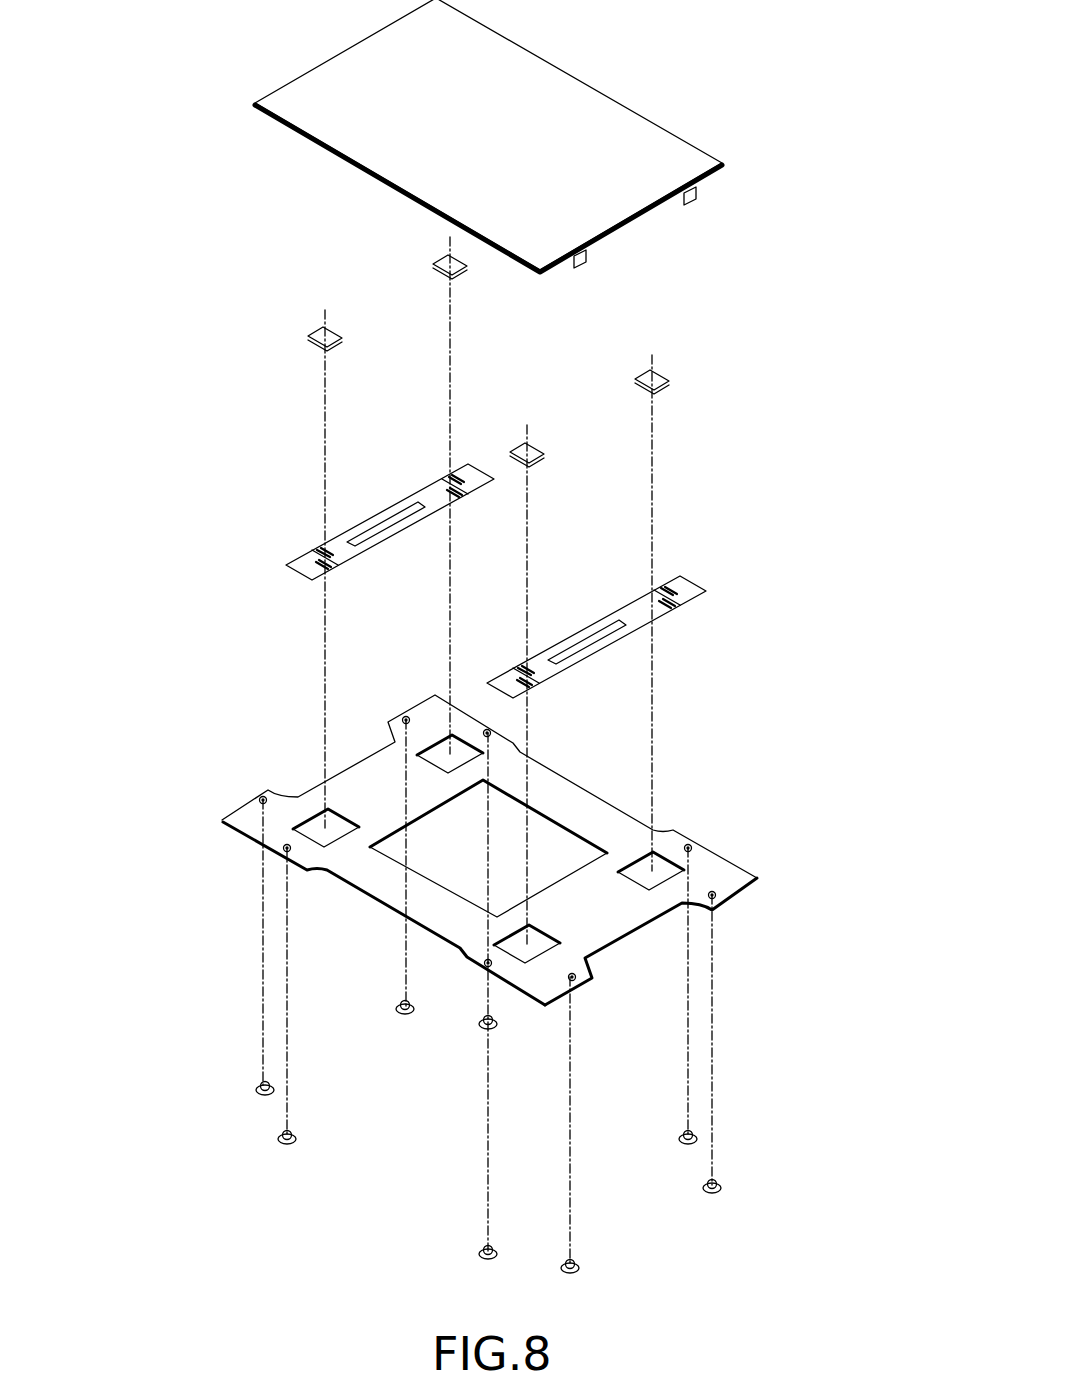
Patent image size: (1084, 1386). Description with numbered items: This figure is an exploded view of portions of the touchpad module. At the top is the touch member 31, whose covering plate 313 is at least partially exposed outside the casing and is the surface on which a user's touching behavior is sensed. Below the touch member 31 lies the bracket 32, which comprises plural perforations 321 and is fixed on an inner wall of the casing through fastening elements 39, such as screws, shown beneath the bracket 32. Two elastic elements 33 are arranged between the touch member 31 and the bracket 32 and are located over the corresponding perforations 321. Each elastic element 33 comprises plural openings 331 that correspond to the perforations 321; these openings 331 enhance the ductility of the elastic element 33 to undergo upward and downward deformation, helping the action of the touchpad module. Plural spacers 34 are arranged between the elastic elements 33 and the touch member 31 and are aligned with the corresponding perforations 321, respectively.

The touch member 31 is at (492, 136).
The covering plate 313 is at (541, 79).
The bracket 32 is at (564, 790).
The perforations 321 is at (340, 822).
The elastic elements 33 is at (410, 493).
The openings 331 is at (304, 558).
The spacers 34 is at (446, 257).
The fastening elements 39 is at (399, 1000).